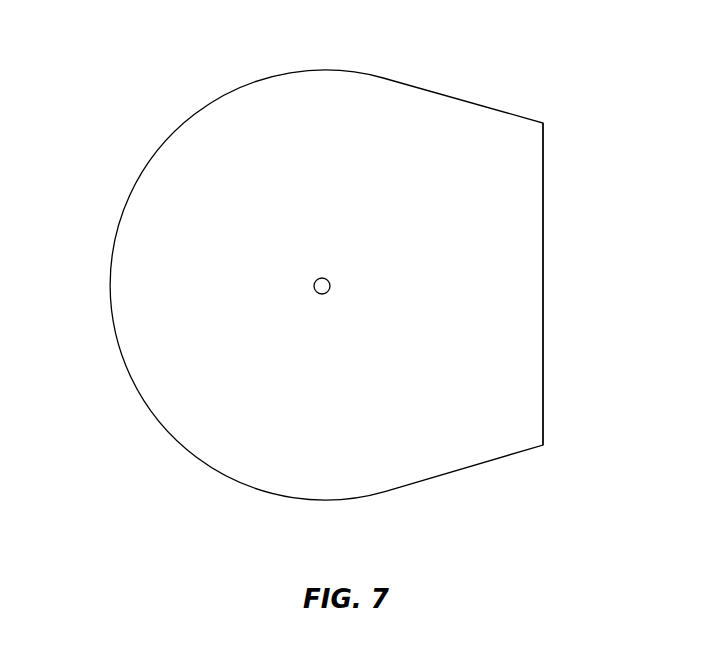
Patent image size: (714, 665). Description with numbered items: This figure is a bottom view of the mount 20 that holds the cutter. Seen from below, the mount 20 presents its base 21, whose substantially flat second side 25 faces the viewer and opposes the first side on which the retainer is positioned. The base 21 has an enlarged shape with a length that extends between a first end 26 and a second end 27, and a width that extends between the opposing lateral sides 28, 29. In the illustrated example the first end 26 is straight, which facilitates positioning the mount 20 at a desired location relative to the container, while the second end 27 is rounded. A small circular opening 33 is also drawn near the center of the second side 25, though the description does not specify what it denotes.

The mount 20 is at (218, 60).
The base 21 is at (186, 160).
The second side 25 is at (518, 276).
The first end 26 is at (543, 180).
The second end 27 is at (118, 342).
The lateral side 28 is at (328, 500).
The lateral side 29 is at (323, 69).
The pivot hole 33 is at (331, 285).